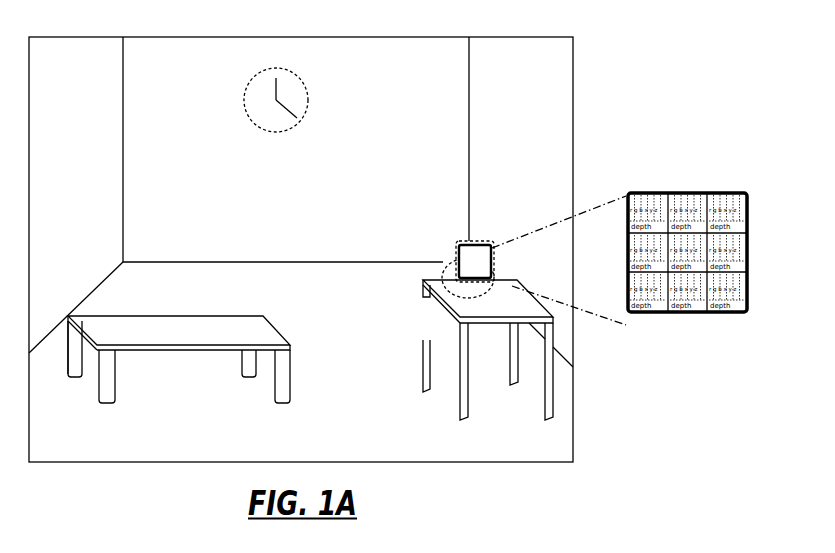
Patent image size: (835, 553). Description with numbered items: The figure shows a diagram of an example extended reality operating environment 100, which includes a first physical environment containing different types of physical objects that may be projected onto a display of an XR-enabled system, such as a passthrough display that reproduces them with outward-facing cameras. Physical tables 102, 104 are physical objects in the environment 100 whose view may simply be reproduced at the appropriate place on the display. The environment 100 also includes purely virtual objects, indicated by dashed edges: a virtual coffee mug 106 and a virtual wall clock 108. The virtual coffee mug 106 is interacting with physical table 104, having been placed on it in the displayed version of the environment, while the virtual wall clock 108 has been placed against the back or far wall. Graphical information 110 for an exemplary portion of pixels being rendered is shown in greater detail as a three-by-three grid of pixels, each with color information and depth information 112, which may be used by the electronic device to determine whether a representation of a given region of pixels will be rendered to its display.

The operating environment 100 is at (320, 37).
The physical table 102 is at (127, 350).
The physical table 104 is at (470, 304).
The virtual coffee mug 106 is at (472, 240).
The virtual wall clock 108 is at (265, 98).
The graphical information 110 is at (673, 193).
The depth information 112 is at (717, 308).